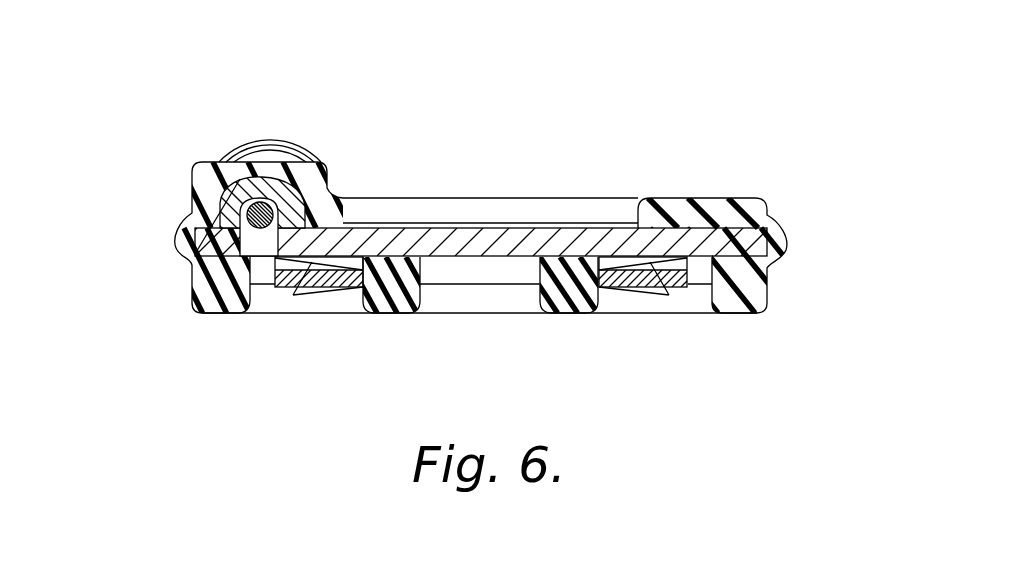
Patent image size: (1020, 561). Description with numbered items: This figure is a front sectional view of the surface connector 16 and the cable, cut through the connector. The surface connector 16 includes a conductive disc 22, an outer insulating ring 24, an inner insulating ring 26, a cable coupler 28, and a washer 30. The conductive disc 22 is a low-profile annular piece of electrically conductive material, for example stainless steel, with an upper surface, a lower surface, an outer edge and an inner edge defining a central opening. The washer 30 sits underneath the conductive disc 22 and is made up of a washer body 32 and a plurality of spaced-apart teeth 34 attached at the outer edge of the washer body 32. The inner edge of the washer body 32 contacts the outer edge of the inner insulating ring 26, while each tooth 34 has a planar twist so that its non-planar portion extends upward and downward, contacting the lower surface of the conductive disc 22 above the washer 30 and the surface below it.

The surface connector 16 is at (513, 120).
The conductive disc 22 is at (583, 237).
The outer insulating ring 24 is at (750, 202).
The inner insulating ring 26 is at (556, 298).
The cable coupler 28 is at (200, 177).
The washer 30 is at (260, 303).
The washer body 32 is at (340, 280).
The teeth 34 is at (278, 277).